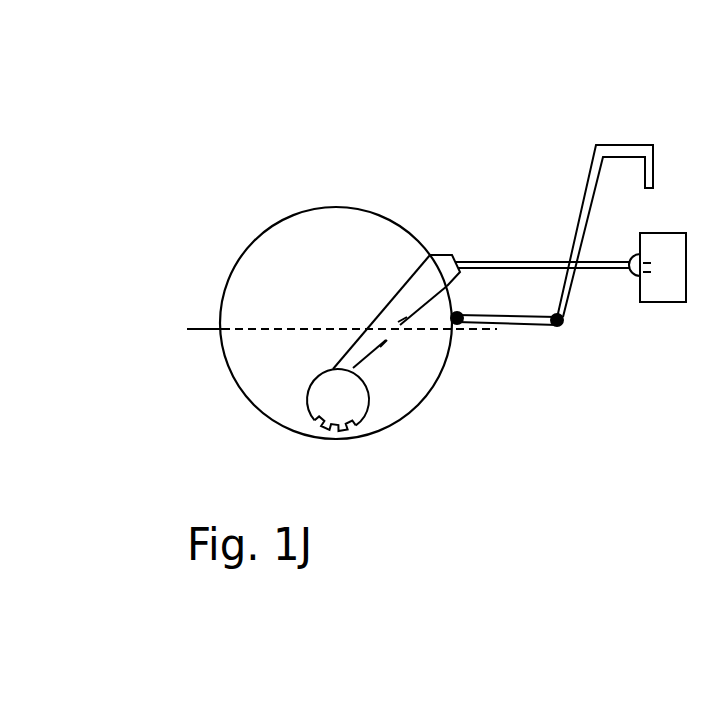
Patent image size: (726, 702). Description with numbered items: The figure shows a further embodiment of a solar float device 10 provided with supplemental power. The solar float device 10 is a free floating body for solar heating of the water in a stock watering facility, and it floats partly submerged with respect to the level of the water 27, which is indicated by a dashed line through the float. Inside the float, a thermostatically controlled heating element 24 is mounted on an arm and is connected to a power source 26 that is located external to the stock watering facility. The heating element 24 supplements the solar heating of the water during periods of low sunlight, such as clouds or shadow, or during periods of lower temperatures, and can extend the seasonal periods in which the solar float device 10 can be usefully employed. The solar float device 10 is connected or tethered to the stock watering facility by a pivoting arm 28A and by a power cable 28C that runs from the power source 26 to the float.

The solar float device 10 is at (362, 177).
The level of the water 27 is at (213, 329).
The thermostatically controlled heating element 24 is at (366, 386).
The power cable 28C is at (495, 262).
The pivoting arm 28A is at (585, 198).
The power source 26 is at (657, 303).